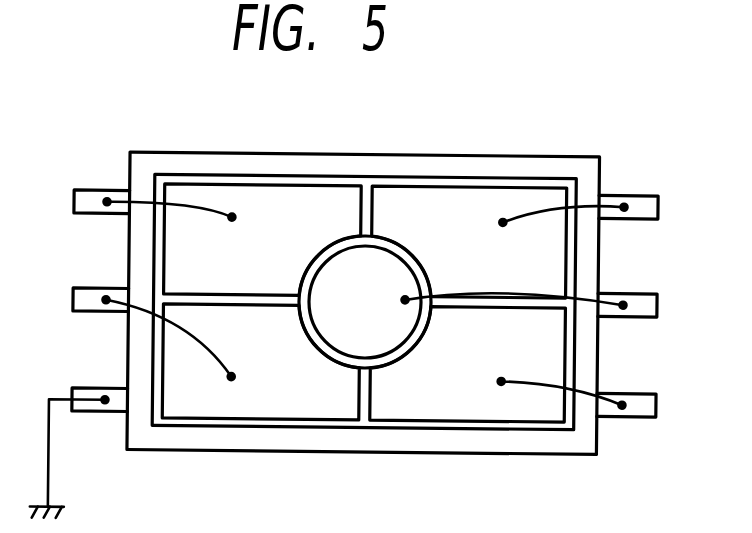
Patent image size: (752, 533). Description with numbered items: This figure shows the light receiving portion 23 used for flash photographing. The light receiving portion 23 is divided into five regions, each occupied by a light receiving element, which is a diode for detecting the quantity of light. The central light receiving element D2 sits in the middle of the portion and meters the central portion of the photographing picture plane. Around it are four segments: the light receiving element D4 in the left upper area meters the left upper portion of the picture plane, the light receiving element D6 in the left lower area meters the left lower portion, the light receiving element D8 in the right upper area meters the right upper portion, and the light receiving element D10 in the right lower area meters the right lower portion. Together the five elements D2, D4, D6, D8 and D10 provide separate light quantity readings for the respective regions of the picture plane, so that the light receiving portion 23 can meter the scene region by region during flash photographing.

The light receiving portion 23 is at (452, 154).
The light receiving element D2 is at (349, 262).
The light receiving element D4 is at (259, 197).
The light receiving element D6 is at (224, 407).
The light receiving element D8 is at (532, 195).
The light receiving element D10 is at (533, 408).